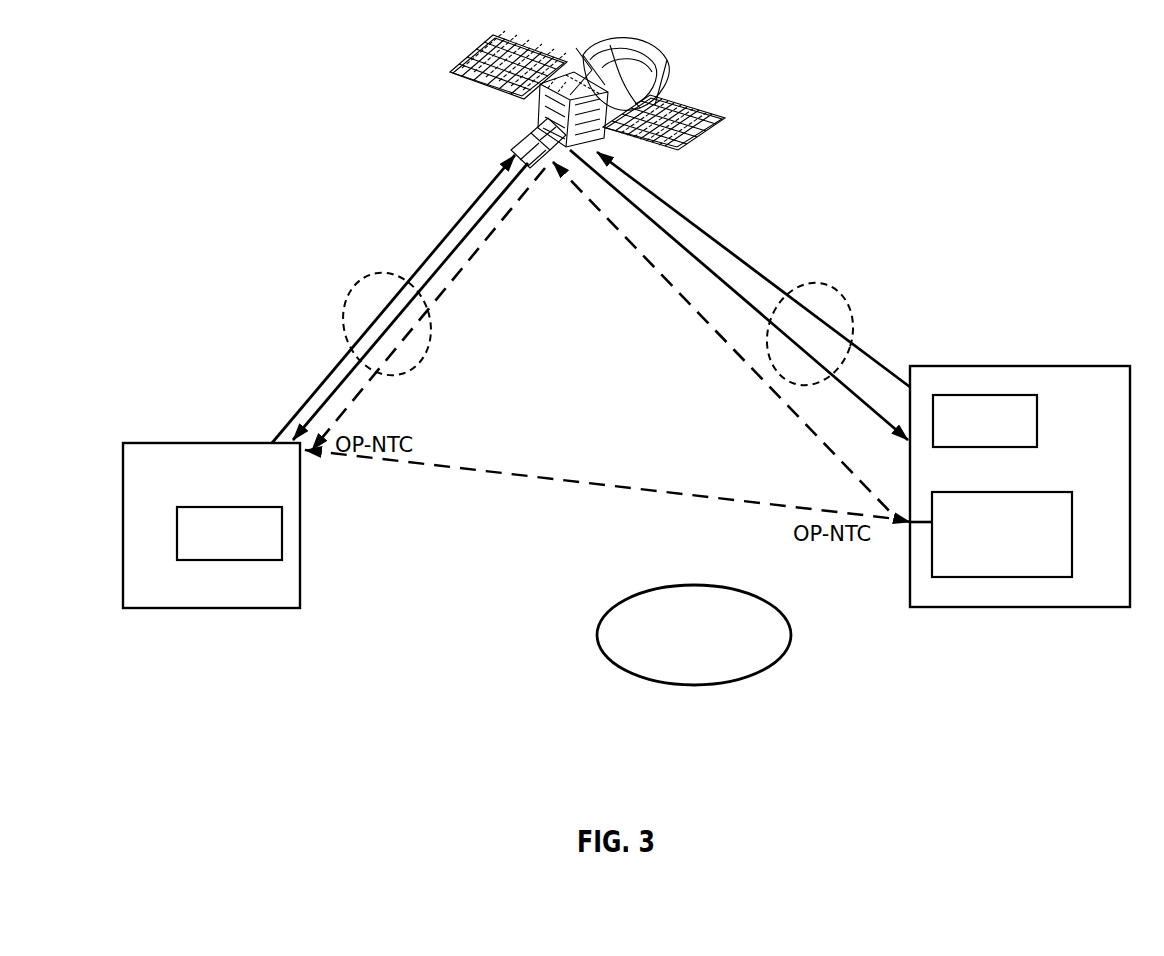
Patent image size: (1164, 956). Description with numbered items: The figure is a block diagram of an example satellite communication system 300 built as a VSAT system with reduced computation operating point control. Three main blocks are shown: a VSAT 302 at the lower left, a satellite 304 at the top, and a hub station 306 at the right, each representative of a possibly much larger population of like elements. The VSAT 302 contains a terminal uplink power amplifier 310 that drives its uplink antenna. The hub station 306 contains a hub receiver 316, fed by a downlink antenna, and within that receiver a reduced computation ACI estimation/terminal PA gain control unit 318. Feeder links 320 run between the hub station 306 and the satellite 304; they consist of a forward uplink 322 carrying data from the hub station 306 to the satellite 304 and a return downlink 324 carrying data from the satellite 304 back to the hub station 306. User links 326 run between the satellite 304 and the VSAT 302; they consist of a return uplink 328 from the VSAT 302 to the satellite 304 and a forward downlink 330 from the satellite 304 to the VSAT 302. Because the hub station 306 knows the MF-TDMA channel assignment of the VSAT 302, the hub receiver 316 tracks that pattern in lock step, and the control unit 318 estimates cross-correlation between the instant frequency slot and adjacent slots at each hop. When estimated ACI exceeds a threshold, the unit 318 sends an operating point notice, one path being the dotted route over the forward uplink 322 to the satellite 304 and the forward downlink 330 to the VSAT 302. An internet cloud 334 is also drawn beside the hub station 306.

The satellite communication system 300 is at (1066, 164).
The VSAT 302 is at (198, 443).
The satellite 304 is at (686, 88).
The hub station 306 is at (1007, 366).
The terminal uplink power amplifier 310 is at (192, 507).
The hub receiver 316 is at (1037, 422).
The ACI estimation/terminal PA gain control unit 318 is at (1020, 492).
The feeder links 320 is at (824, 283).
The forward uplink 322 is at (737, 257).
The return downlink 324 is at (876, 411).
The user links 326 is at (368, 272).
The return uplink 328 is at (443, 237).
The forward downlink 330 is at (450, 265).
The internet 334 is at (703, 585).